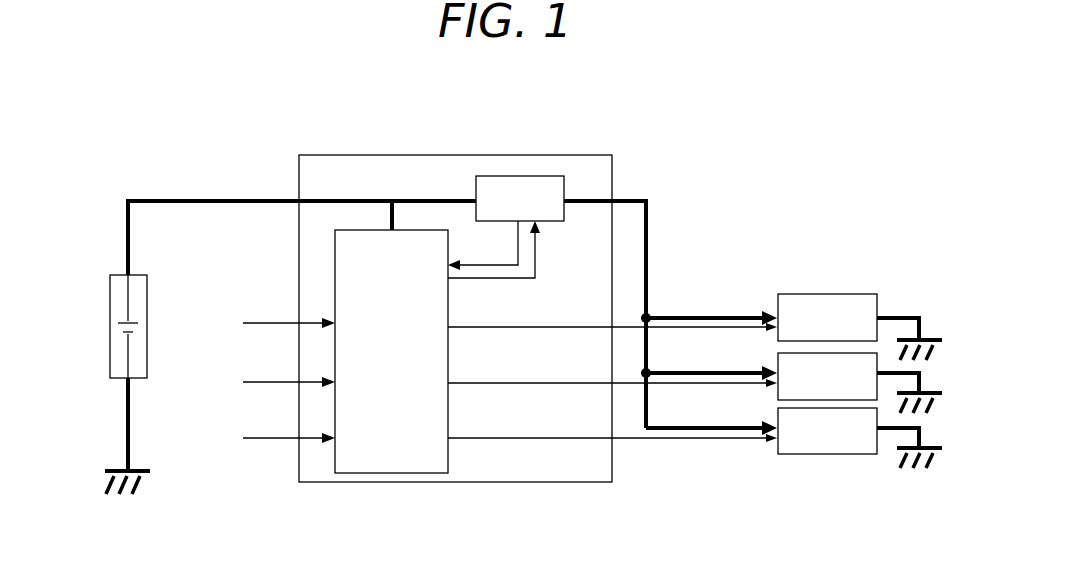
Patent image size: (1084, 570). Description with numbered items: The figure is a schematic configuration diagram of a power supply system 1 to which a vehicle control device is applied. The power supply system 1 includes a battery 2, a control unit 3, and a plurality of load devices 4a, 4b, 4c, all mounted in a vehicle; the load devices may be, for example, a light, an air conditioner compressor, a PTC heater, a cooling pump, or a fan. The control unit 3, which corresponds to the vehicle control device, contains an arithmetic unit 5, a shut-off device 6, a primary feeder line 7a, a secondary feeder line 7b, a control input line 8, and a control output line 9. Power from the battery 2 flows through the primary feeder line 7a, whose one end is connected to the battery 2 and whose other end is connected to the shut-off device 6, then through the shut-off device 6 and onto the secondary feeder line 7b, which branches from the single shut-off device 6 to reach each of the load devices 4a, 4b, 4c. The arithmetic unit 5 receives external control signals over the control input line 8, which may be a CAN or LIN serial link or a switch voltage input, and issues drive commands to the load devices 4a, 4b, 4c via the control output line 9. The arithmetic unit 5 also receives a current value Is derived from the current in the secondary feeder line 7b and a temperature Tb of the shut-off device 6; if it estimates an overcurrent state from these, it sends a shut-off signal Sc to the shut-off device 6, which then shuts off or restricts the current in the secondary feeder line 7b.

The power supply system 1 is at (239, 93).
The battery 2 is at (109, 284).
The control unit 3 is at (368, 156).
The load device 4a is at (797, 292).
The load device 4b is at (857, 352).
The load device 4c is at (833, 456).
The arithmetic unit 5 is at (334, 278).
The shut-off device 6 is at (538, 192).
The primary feeder line 7a is at (213, 198).
The secondary feeder line 7b is at (648, 262).
The control input line 8 is at (260, 422).
The control output line 9 is at (612, 428).